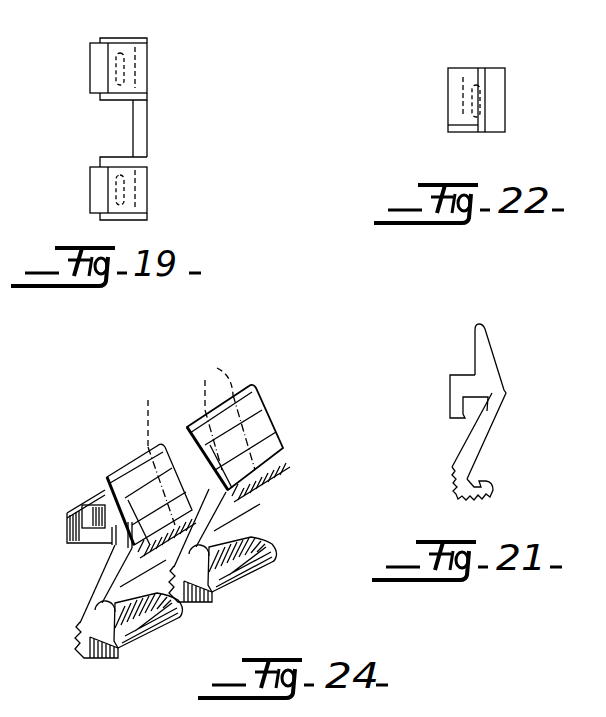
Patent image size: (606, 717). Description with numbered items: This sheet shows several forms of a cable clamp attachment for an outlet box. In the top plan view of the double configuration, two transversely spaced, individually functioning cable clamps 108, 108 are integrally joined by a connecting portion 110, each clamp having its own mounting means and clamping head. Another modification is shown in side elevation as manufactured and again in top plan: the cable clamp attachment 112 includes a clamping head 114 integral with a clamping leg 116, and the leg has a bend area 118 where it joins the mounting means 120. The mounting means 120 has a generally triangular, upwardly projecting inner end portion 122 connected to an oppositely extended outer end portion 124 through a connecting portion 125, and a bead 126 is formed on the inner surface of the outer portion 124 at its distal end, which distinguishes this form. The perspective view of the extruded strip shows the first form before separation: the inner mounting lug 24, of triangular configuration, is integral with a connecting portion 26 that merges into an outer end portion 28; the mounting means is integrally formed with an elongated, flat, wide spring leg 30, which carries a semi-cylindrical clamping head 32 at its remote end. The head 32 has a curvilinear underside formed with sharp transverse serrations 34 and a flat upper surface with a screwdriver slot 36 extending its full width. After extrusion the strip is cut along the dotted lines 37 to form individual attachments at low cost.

In FIG. 19, the cable clamp 108 is at (82, 78).
In FIG. 19, the connecting portion 110 is at (147, 120).
In FIG. 22, the cable clamp attachment 112 is at (494, 60).
In FIG. 21, the cable clamp attachment 112 is at (490, 446).
In FIG. 21, the clamping head 114 is at (480, 485).
In FIG. 21, the clamping leg 116 is at (473, 460).
In FIG. 21, the bend area 118 is at (505, 395).
In FIG. 22, the mounting means 120 is at (467, 68).
In FIG. 21, the mounting means 120 is at (452, 370).
In FIG. 22, the inner end portion 122 is at (448, 126).
In FIG. 21, the inner end portion 122 is at (476, 330).
In FIG. 21, the outer end portion 124 is at (463, 408).
In FIG. 21, the connecting portion 125 is at (470, 370).
In FIG. 21, the bead 126 is at (487, 421).
In FIG. 24, the inner mounting lug 24 is at (120, 470).
In FIG. 24, the connecting portion 26 is at (100, 545).
In FIG. 24, the outer end portion 28 is at (66, 527).
In FIG. 24, the spring leg 30 is at (100, 574).
In FIG. 24, the clamping head 32 is at (148, 639).
In FIG. 24, the serrations 34 is at (86, 659).
In FIG. 24, the screwdriver slot 36 is at (100, 608).
In FIG. 24, the cutting lines 37 is at (193, 439).